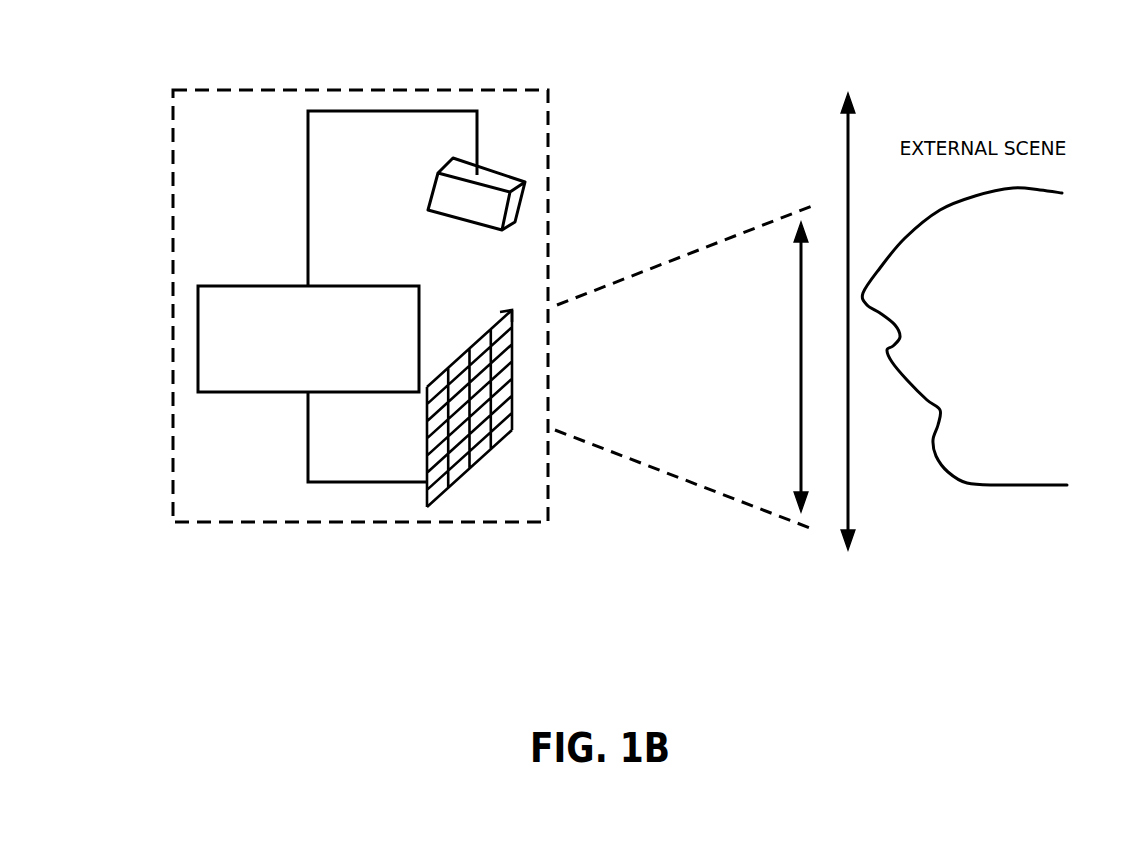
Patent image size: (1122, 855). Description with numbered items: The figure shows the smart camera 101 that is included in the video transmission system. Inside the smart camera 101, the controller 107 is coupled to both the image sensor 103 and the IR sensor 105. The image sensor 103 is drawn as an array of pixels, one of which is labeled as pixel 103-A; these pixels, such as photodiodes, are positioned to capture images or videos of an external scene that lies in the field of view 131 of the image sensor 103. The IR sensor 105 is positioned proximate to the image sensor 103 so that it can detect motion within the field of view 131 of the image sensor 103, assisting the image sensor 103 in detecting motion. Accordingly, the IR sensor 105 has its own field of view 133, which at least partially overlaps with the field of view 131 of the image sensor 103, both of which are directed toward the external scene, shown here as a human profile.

The smart camera 101 is at (360, 289).
The image sensor 103 is at (426, 507).
The pixel 103-A is at (502, 312).
The IR sensor 105 is at (433, 190).
The controller 107 is at (276, 393).
The field of view of the image sensor 131 is at (683, 367).
The field of view of the IR sensor 133 is at (734, 321).